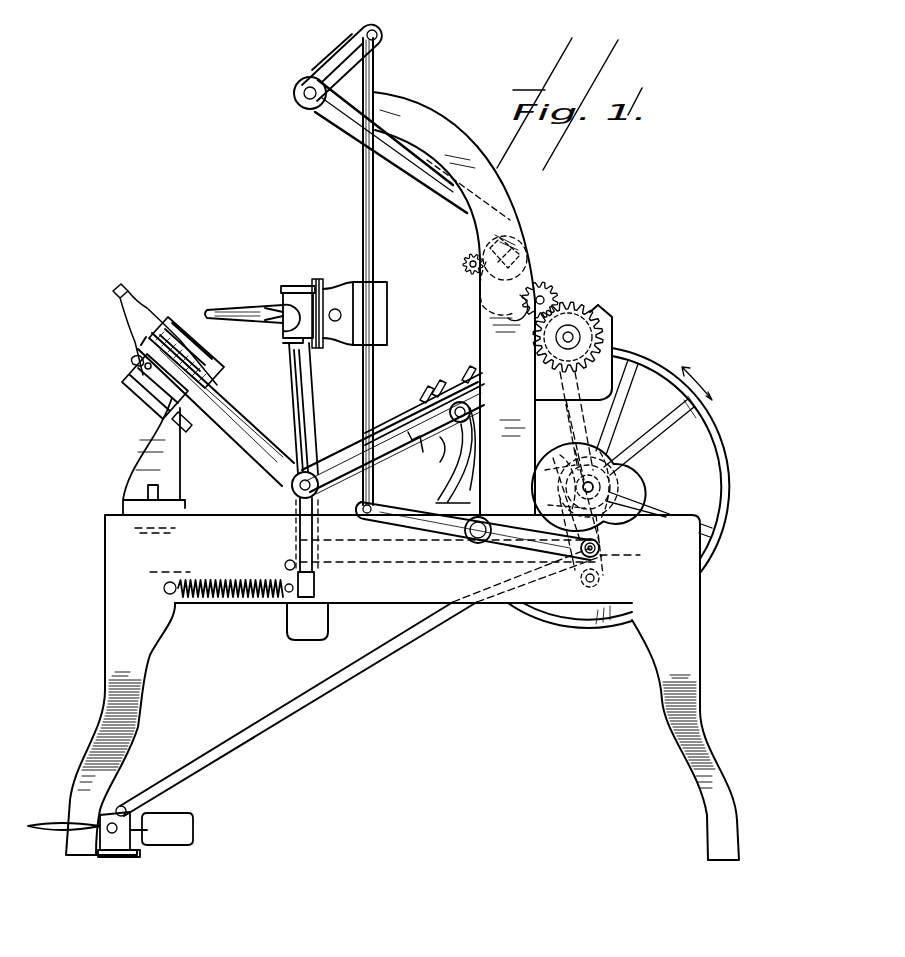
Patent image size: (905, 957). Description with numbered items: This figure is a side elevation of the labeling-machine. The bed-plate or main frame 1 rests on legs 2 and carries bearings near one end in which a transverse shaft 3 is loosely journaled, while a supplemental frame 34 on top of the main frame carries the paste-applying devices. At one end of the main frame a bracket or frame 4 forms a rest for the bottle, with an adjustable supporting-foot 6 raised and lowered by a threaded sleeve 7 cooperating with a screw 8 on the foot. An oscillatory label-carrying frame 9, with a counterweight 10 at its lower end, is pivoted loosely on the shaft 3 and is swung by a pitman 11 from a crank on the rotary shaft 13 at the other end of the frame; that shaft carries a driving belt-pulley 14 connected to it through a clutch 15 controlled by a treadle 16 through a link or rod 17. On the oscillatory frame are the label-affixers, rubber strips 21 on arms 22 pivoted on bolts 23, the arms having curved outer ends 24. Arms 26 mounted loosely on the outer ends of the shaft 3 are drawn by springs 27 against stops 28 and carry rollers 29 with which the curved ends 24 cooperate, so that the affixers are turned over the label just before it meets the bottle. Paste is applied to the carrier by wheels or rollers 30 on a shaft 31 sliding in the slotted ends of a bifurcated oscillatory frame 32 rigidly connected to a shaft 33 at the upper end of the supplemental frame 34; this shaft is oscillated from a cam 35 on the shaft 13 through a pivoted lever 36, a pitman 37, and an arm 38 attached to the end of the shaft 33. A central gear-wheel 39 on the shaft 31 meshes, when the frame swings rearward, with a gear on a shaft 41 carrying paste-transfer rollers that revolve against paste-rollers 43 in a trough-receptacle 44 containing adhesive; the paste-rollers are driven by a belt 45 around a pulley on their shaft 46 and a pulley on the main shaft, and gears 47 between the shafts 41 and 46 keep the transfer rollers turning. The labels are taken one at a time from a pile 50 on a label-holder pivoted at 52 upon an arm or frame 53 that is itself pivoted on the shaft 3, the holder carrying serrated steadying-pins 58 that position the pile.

The bed-plate or main frame 1 is at (402, 559).
The legs 2 is at (664, 676).
The transverse shaft 3 is at (292, 490).
The bracket or frame 4 is at (150, 460).
The adjustable supporting-foot 6 is at (190, 430).
The threaded sleeve 7 is at (128, 366).
The screw 8 is at (152, 410).
The oscillatory label-carrying frame 9 is at (315, 412).
The counterweight 10 is at (296, 638).
The pitman 11 is at (376, 562).
The rotary shaft 13 is at (600, 470).
The driving belt-pulley 14 is at (740, 460).
The clutch 15 is at (552, 490).
The treadle 16 is at (46, 822).
The link or rod 17 is at (275, 730).
The label-affixers (strips) 21 is at (388, 320).
The affixer-arms 22 is at (338, 340).
The bolts 23 is at (318, 277).
The curved outer ends 24 is at (250, 312).
The arms 26 is at (240, 425).
The springs 27 is at (244, 596).
The stops 28 is at (284, 563).
The rollers 29 is at (178, 340).
The paste wheels or rollers 30 is at (474, 278).
The shaft 31 is at (520, 250).
The bifurcated oscillatory frame 32 is at (350, 130).
The shaft 33 is at (296, 100).
The supplemental frame 34 is at (454, 303).
The cam 35 is at (645, 485).
The pivoted lever 36 is at (417, 530).
The pitman 37 is at (378, 208).
The arm 38 is at (340, 62).
The gear-wheel 39 is at (464, 264).
The shaft 41 is at (518, 318).
The paste-rollers 43 is at (598, 292).
The trough-receptacle 44 is at (655, 365).
The belt 45 is at (615, 393).
The shaft 46 is at (612, 340).
The gears 47 is at (552, 285).
The pile of labels 50 is at (430, 408).
The pivot 52 is at (452, 430).
The arm or frame 53 is at (348, 445).
The serrated steadying-pins 58 is at (450, 368).